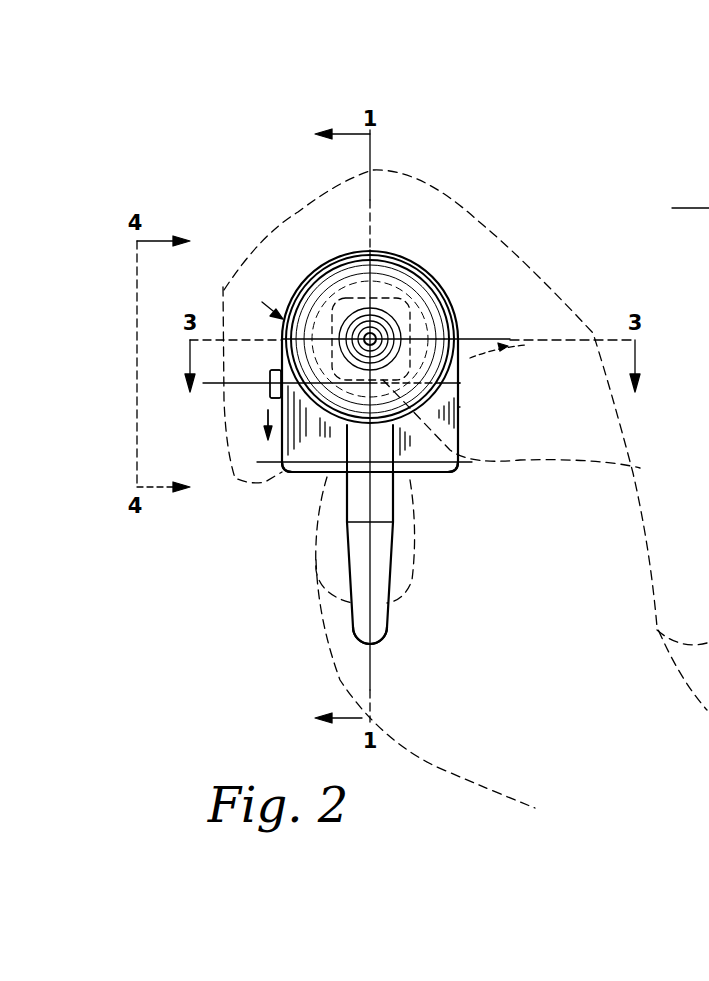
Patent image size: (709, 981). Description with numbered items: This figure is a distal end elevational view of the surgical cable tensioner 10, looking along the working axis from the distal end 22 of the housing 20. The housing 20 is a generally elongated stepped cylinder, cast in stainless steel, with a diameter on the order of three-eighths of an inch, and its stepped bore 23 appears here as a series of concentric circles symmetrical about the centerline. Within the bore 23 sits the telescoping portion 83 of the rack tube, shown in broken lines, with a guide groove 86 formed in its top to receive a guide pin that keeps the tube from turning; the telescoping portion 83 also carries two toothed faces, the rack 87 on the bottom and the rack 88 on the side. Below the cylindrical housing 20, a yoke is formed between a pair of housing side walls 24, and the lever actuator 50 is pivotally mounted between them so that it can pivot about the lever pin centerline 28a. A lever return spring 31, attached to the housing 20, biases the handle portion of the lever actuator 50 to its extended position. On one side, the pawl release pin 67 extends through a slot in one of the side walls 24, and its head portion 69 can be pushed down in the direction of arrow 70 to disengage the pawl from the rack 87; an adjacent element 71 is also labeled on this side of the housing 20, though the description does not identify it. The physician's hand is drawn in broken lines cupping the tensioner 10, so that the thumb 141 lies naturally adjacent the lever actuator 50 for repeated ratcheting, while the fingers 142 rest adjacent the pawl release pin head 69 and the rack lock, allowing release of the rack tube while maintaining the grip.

The surgical cable tensioner 10 is at (277, 484).
The housing 20 is at (315, 268).
The distal end 22 is at (460, 383).
The stepped bore 23 is at (375, 338).
The housing side walls 24 is at (307, 473).
The lever pin centerline 28a is at (472, 463).
The lever return spring 31 is at (383, 493).
The lever actuator 50 is at (350, 627).
The pawl release pin 67 is at (270, 387).
The head portion 69 is at (280, 390).
The arrow 70 is at (278, 412).
The clip arm 71 is at (250, 400).
The telescoping portion 83 is at (398, 297).
The guide groove 86 is at (395, 300).
The rack 87 is at (460, 407).
The rack 88 is at (332, 330).
The thumb 141 is at (333, 535).
The fingers 142 is at (298, 212).